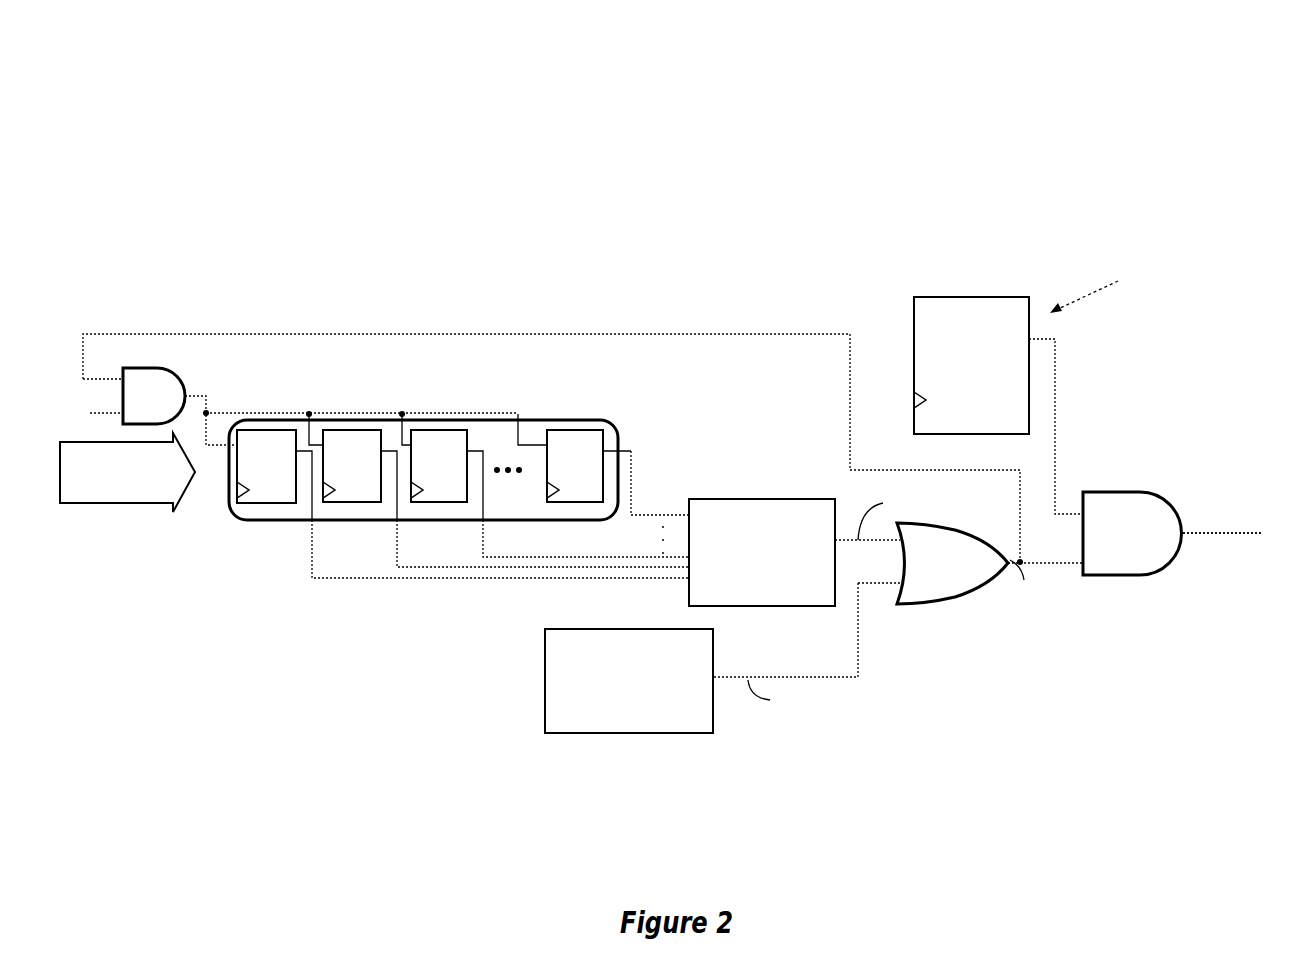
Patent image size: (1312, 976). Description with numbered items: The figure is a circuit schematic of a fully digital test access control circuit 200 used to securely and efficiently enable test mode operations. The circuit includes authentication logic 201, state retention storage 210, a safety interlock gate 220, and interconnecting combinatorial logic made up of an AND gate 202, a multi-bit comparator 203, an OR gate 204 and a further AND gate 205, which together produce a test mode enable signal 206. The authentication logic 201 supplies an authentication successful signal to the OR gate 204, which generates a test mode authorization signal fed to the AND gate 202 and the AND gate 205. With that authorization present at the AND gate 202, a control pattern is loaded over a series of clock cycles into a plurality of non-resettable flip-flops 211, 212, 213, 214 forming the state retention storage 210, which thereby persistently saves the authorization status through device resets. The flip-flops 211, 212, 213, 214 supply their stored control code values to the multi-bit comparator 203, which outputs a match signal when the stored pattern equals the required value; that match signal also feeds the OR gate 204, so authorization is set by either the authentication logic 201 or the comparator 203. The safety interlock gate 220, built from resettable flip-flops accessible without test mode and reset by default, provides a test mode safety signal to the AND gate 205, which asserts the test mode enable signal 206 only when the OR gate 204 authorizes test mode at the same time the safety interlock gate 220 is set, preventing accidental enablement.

The test access control circuit 200 is at (96, 43).
The authentication logic 201 is at (629, 681).
The AND gate 202 is at (154, 396).
The multi-bit comparator 203 is at (762, 552).
The OR gate 204 is at (952, 563).
The AND gate 205 is at (1132, 533).
The test mode enable signal 206 is at (1188, 537).
The state retention storage 210 is at (351, 494).
The non-resettable flip-flop 211 is at (266, 466).
The non-resettable flip-flop 212 is at (352, 466).
The non-resettable flip-flop 213 is at (439, 466).
The non-resettable flip-flop 214 is at (575, 466).
The safety interlock gate 220 is at (971, 365).